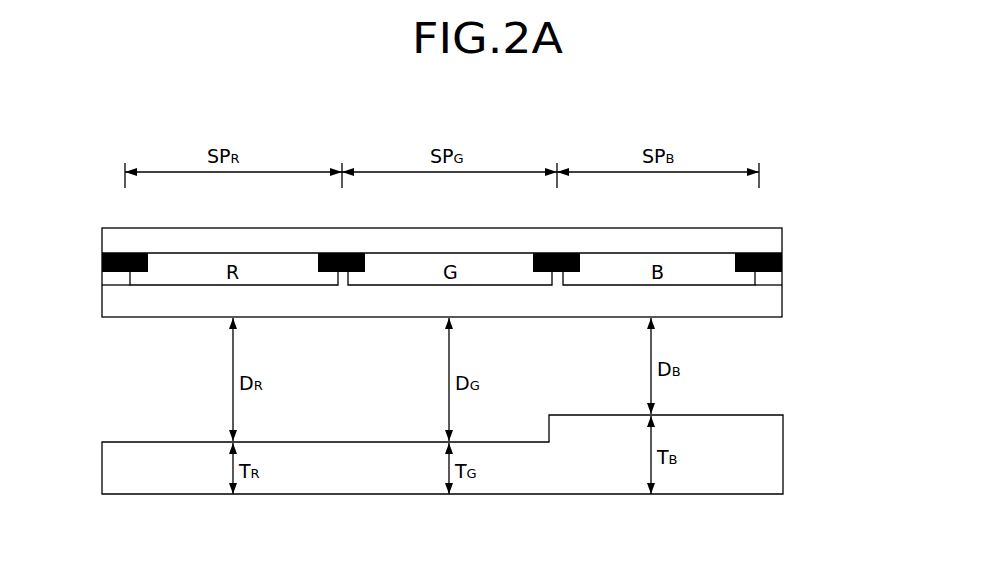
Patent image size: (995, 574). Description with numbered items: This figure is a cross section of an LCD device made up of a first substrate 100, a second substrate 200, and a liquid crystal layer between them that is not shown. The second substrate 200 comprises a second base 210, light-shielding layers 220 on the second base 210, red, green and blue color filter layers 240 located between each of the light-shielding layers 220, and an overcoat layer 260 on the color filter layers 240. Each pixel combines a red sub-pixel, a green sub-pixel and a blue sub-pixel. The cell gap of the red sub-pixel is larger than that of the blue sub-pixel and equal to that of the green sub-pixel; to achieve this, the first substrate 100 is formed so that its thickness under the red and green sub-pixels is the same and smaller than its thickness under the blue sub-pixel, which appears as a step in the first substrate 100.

The first substrate 100 is at (775, 458).
The second substrate 200 is at (517, 272).
The second base 210 is at (775, 238).
The light-shielding layers 220 is at (782, 262).
The color filter layers 240 is at (745, 281).
The overcoat layer 260 is at (775, 303).